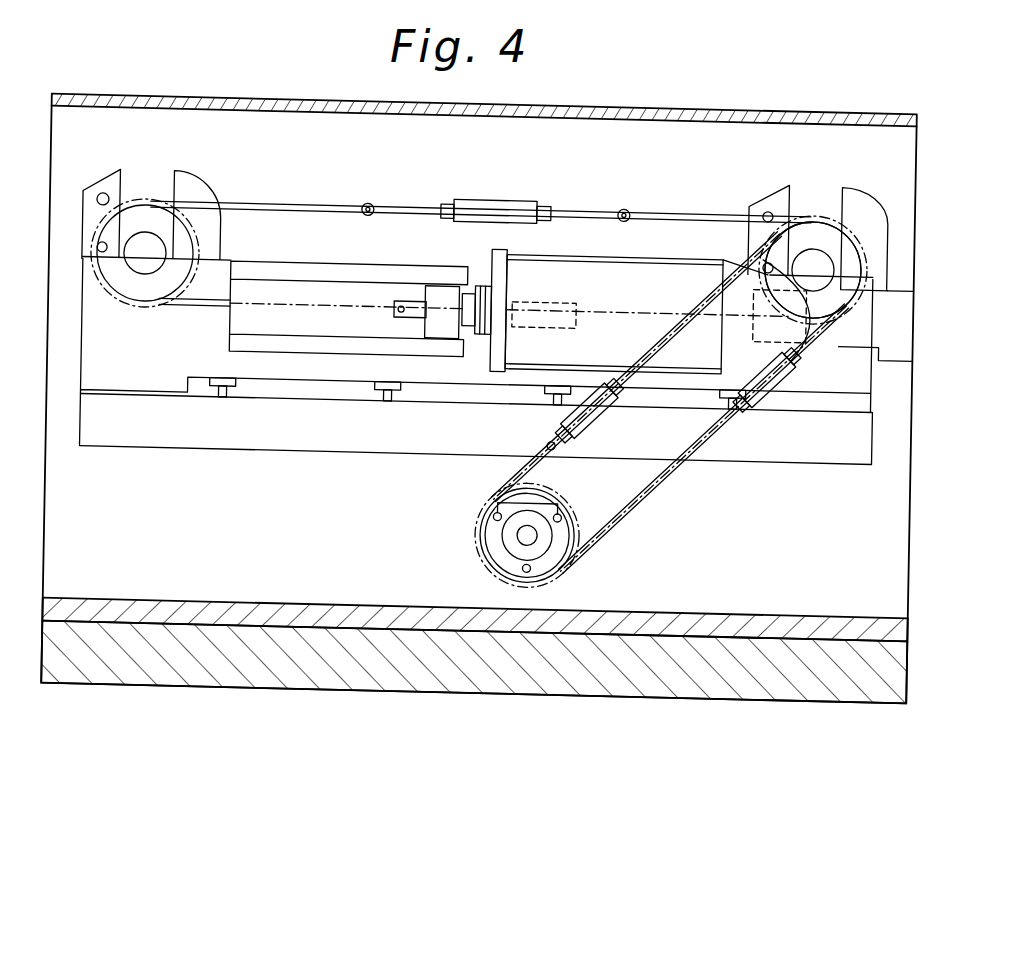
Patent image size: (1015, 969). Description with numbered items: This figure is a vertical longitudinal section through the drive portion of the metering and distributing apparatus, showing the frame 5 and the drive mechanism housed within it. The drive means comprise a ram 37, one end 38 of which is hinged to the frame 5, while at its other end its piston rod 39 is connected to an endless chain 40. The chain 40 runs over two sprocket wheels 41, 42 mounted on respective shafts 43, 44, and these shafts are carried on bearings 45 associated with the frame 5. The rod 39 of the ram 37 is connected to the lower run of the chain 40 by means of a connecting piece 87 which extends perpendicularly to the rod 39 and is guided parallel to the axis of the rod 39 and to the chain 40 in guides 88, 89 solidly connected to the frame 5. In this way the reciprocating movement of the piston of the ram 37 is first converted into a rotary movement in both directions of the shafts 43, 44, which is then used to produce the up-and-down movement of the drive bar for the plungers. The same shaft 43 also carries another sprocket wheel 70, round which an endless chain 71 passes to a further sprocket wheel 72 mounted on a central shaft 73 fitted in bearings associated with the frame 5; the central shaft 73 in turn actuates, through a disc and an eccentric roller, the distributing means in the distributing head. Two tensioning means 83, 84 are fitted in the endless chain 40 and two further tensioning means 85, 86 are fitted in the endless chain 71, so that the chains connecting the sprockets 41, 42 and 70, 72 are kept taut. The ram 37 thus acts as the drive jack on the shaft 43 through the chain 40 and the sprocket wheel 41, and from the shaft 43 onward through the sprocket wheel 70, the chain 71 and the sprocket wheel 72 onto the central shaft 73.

The frame 5 is at (905, 120).
The ram 37 is at (589, 267).
The end of the ram 38 is at (785, 315).
The piston rod 39 is at (468, 285).
The endless chain 40 is at (314, 205).
The sprocket wheel 41 is at (862, 238).
The sprocket wheel 42 is at (139, 205).
The shaft 43 is at (812, 241).
The shaft 44 is at (140, 265).
The bearings 45 is at (197, 189).
The sprocket wheel 70 is at (813, 270).
The endless chain 71 is at (707, 429).
The sprocket wheel 72 is at (568, 567).
The central shaft 73 is at (527, 531).
The tensioning means 83 is at (496, 199).
The tensioning means 84 is at (414, 314).
The tensioning means 85 is at (598, 407).
The tensioning means 86 is at (781, 385).
The connecting piece 87 is at (439, 281).
The guide 88 is at (297, 266).
The guide 89 is at (339, 340).